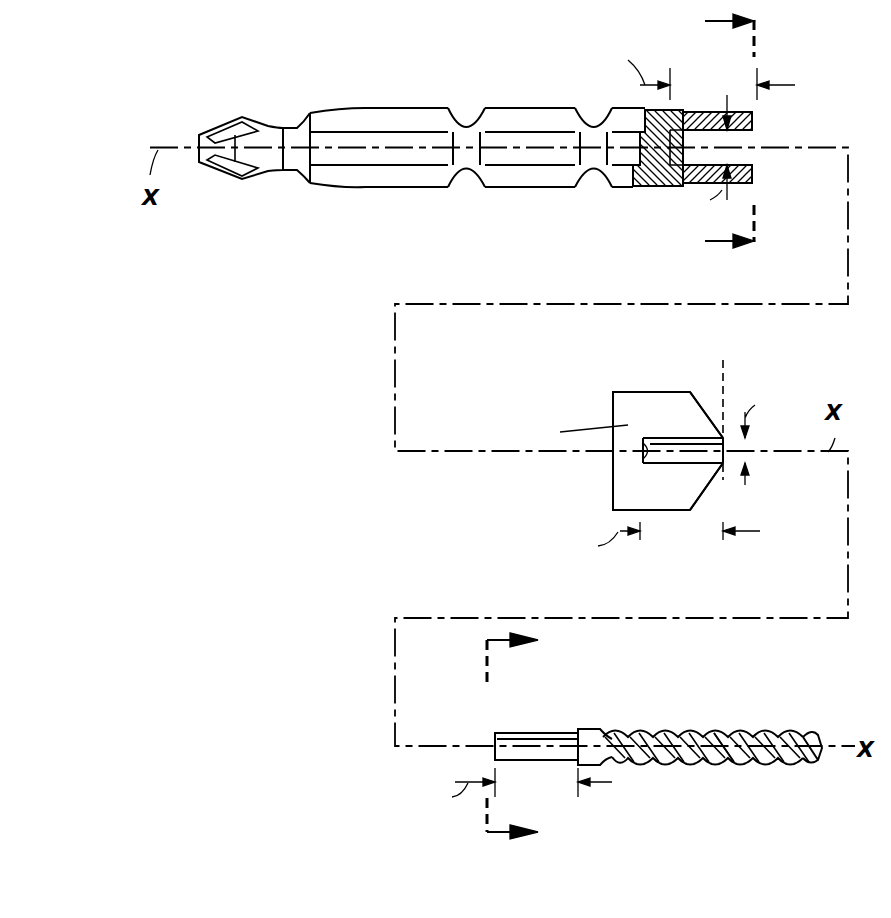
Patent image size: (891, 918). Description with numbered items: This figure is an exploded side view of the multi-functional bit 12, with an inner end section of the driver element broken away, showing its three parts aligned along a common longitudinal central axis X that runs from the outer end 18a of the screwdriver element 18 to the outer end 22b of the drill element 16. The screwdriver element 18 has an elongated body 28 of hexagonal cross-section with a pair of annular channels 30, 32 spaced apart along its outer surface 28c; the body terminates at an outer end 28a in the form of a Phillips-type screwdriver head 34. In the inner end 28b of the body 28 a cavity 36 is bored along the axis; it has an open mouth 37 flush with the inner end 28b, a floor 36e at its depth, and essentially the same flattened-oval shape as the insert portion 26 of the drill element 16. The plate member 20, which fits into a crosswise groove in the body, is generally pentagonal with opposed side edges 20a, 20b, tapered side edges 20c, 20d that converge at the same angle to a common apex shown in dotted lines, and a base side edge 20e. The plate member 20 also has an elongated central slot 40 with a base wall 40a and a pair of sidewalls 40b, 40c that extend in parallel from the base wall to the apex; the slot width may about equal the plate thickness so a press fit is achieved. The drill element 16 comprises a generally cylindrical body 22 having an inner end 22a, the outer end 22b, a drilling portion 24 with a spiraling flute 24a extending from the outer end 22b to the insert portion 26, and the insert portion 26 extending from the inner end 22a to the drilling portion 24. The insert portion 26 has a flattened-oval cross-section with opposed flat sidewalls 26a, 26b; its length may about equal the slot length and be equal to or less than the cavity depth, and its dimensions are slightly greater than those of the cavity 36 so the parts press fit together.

The multi-functional bit 12 is at (858, 68).
The drill element 16 is at (662, 740).
The screwdriver element 18 is at (358, 112).
The outer end of the screwdriver element 18a is at (200, 140).
The plate member 20 is at (615, 405).
The side edge of the plate member 20a is at (660, 392).
The side edge of the plate member 20b is at (620, 510).
The tapered side edge 20c is at (688, 393).
The tapered side edge 20d is at (707, 490).
The base side edge 20e is at (614, 490).
The cylindrical body of the drill element 22 is at (616, 740).
The inner end of the drill element body 22a is at (495, 743).
The outer end of the drill element 22b is at (820, 745).
The drilling portion 24 is at (688, 740).
The spiraling flute 24a is at (718, 740).
The insert portion 26 is at (543, 746).
The flat sidewall of the insert portion 26a is at (568, 733).
The flat sidewall of the insert portion 26b is at (530, 760).
The elongated body 28 is at (404, 110).
The outer end of the elongated body 28a is at (303, 118).
The inner end of the elongated body 28b is at (752, 128).
The outer surface of the elongated body 28c is at (530, 120).
The annular channel 30 is at (466, 120).
The annular channel 32 is at (593, 120).
The screwdriver head 34 is at (232, 160).
The cavity 36 is at (690, 170).
The floor of the cavity 36e is at (662, 186).
The open mouth 37 is at (752, 153).
The central slot 40 is at (690, 455).
The base wall of the slot 40a is at (645, 452).
The sidewall of the slot 40b is at (684, 440).
The sidewall of the slot 40c is at (672, 465).